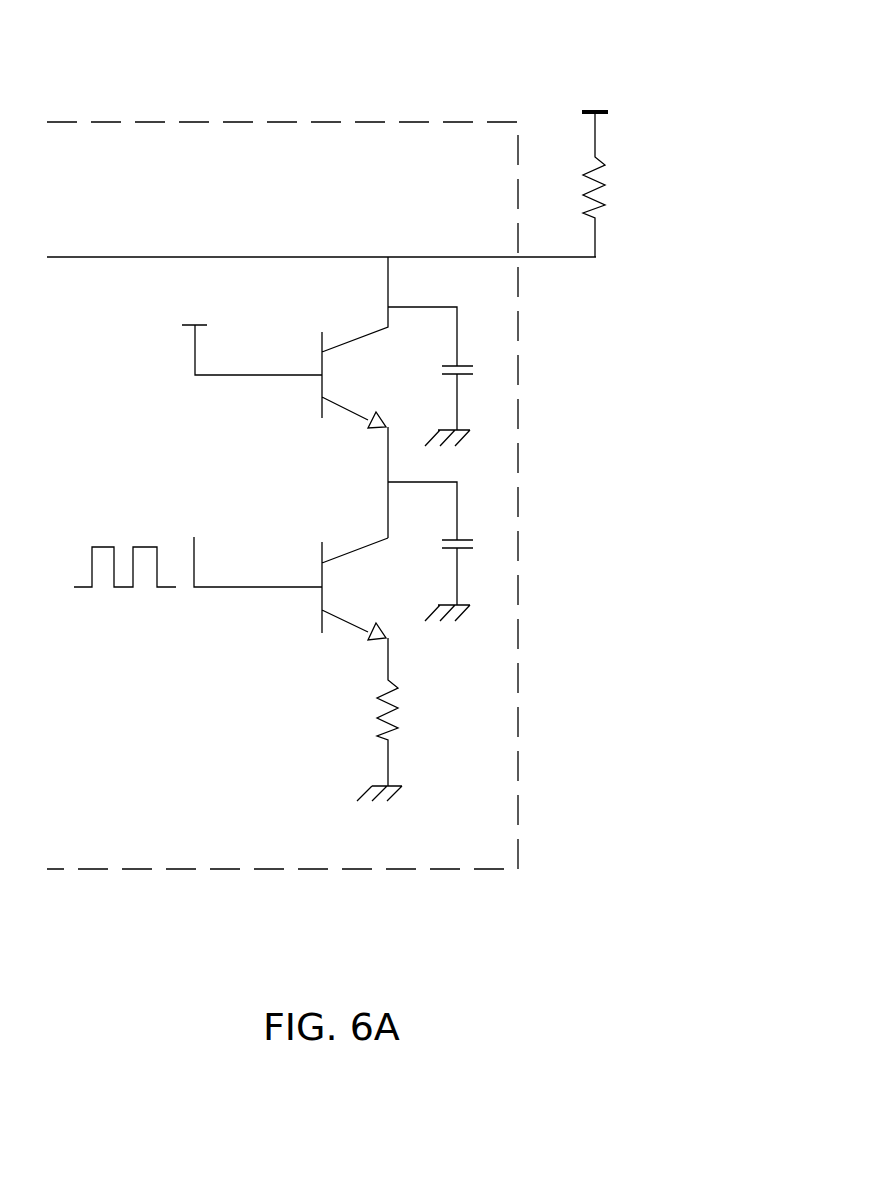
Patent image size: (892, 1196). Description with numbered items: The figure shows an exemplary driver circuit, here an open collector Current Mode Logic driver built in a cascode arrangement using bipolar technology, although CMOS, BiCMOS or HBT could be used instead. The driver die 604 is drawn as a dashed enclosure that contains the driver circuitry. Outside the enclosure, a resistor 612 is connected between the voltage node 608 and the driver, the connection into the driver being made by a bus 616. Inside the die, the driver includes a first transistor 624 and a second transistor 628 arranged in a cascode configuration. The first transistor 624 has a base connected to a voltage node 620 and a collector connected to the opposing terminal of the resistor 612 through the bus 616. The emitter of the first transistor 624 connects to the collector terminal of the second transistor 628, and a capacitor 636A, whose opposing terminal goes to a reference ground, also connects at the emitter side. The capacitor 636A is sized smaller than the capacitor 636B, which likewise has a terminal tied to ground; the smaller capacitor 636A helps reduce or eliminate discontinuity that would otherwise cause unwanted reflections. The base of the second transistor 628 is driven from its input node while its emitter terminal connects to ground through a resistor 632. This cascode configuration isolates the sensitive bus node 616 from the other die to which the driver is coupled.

The driver die 604 is at (257, 122).
The voltage node 608 is at (600, 112).
The resistor 612 is at (598, 180).
The bus 616 is at (230, 257).
The voltage node 620 is at (185, 323).
The first transistor 624 is at (322, 396).
The second transistor 628 is at (322, 608).
The resistor 632 is at (380, 718).
The capacitor 636A is at (465, 365).
The capacitor 636B is at (465, 540).